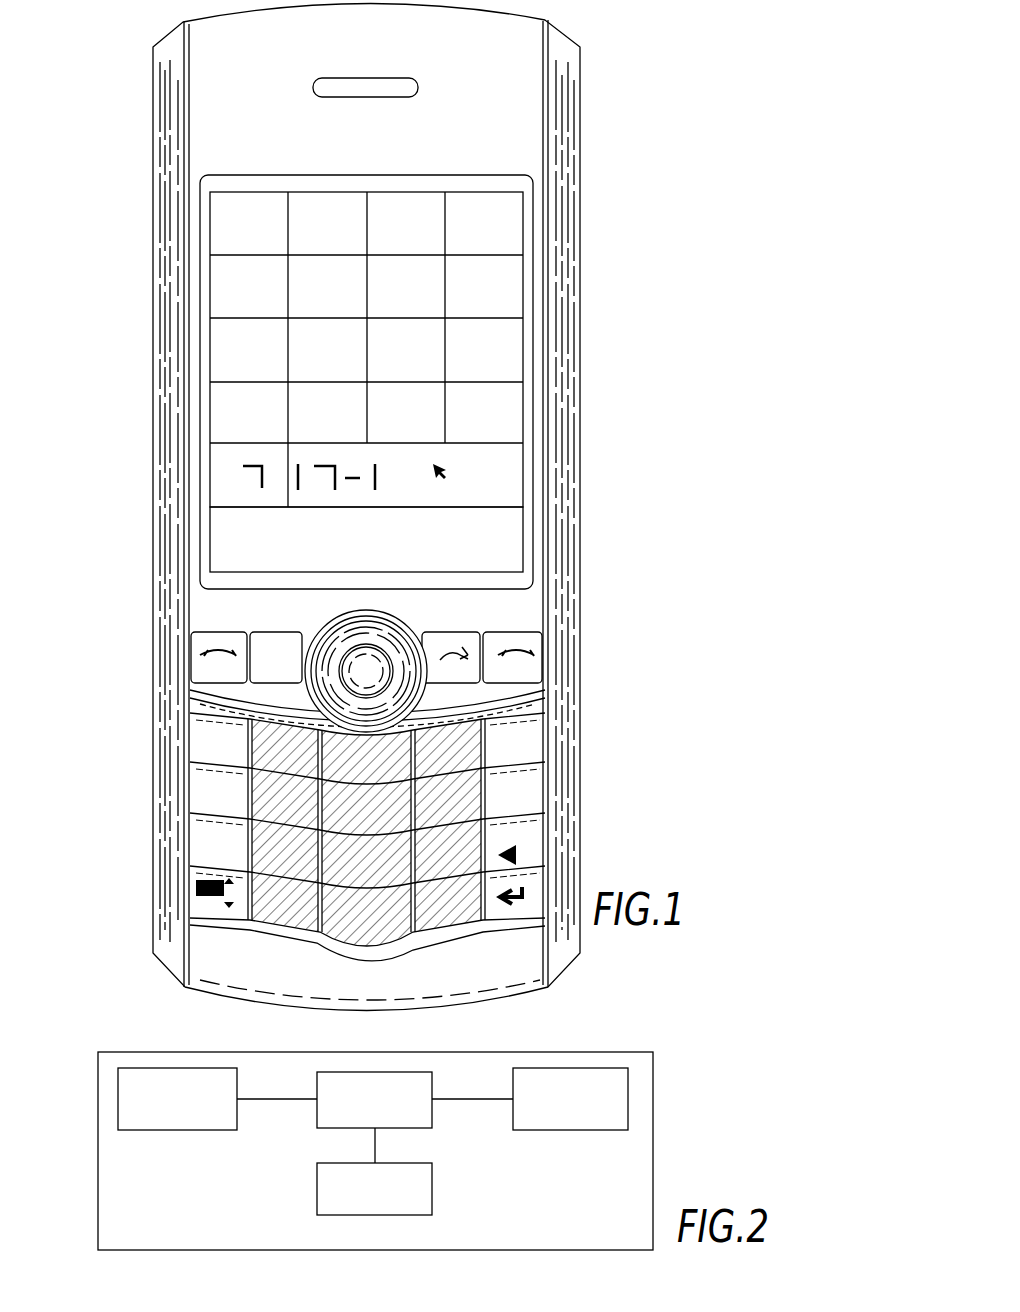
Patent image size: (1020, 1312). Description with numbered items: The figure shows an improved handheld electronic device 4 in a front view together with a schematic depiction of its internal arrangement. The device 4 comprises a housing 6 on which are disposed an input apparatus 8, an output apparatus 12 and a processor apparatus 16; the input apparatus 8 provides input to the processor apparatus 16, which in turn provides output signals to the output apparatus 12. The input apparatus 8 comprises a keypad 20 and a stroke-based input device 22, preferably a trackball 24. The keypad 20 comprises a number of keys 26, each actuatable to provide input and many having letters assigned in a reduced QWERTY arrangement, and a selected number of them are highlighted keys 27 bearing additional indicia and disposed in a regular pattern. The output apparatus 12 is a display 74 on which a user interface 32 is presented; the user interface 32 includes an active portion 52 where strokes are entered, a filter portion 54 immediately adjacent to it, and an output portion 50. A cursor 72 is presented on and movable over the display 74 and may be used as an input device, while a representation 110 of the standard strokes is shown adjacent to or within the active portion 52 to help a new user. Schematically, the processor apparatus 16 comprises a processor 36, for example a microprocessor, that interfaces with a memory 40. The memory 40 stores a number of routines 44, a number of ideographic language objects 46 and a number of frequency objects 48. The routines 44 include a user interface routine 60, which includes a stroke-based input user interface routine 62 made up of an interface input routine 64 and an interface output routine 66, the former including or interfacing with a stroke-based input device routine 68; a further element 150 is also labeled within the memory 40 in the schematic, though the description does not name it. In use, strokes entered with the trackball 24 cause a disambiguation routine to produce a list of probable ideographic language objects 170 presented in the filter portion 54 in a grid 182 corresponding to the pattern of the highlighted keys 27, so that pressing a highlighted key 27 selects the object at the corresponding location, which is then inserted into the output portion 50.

In FIG. 1, the handheld electronic device 4 is at (612, 60).
In FIG. 2, the handheld electronic device 4 is at (670, 1092).
In FIG. 1, the housing 6 is at (583, 130).
In FIG. 2, the housing 6 is at (655, 1155).
In FIG. 1, the input apparatus 8 is at (345, 652).
In FIG. 2, the input apparatus 8 is at (117, 1088).
In FIG. 1, the output apparatus 12 is at (532, 247).
In FIG. 2, the output apparatus 12 is at (601, 1134).
In FIG. 1, the processor apparatus 16 is at (206, 964).
In FIG. 2, the processor apparatus 16 is at (350, 1145).
In FIG. 1, the keypad 20 is at (550, 778).
In FIG. 1, the stroke-based input device 22 is at (634, 665).
In FIG. 1, the trackball 24 is at (380, 652).
In FIG. 1, the keys 26 is at (190, 714).
In FIG. 1, the highlighted keys 27 is at (598, 640).
In FIG. 1, the user interface 32 is at (486, 196).
In FIG. 2, the processor 36 is at (317, 1090).
In FIG. 2, the memory 40 is at (432, 1196).
In FIG. 2, the routines 44 is at (432, 1172).
In FIG. 1, the ideographic language objects 46 is at (612, 292).
In FIG. 2, the ideographic language objects 46 is at (317, 1170).
In FIG. 2, the frequency objects 48 is at (317, 1178).
In FIG. 1, the output portion 50 is at (220, 540).
In FIG. 1, the active portion 52 is at (532, 484).
In FIG. 1, the filter portion 54 is at (432, 191).
In FIG. 2, the user interface routine 60 is at (317, 1200).
In FIG. 2, the stroke-based input user interface routine 62 is at (341, 1212).
In FIG. 2, the interface input routine 64 is at (367, 1215).
In FIG. 2, the interface output routine 66 is at (388, 1215).
In FIG. 2, the stroke-based input device routine 68 is at (423, 1215).
In FIG. 1, the cursor 72 is at (445, 472).
In FIG. 1, the display 74 is at (144, 355).
In FIG. 1, the representation of the standard strokes 110 is at (243, 190).
In FIG. 2, the lookup table 150 is at (418, 1170).
In FIG. 1, the probable ideographic language objects 170 is at (636, 168).
In FIG. 1, the grid 182 is at (600, 462).